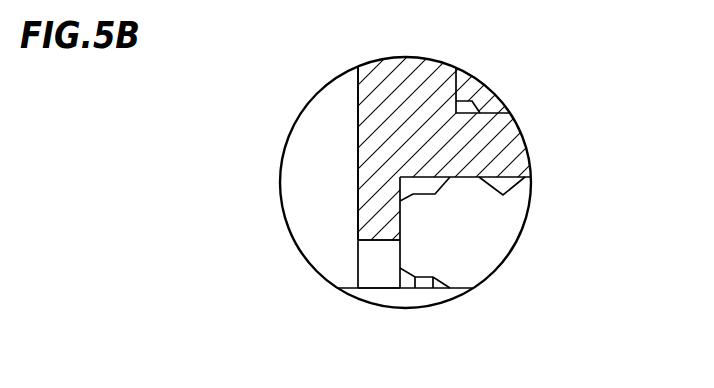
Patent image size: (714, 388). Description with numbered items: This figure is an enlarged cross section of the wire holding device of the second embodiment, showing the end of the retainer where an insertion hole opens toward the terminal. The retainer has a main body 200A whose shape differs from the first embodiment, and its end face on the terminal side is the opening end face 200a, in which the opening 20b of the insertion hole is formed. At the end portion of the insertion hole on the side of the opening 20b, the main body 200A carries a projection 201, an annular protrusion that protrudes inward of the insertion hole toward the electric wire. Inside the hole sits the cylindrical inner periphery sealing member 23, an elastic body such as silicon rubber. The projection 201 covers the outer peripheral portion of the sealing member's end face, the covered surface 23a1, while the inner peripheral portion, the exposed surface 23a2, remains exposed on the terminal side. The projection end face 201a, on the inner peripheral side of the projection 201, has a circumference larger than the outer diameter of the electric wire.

The main body 200A is at (413, 68).
The opening end face 200a is at (358, 122).
The projection 201 is at (380, 207).
The covered surface 23a1 is at (397, 217).
The projection end face 201a is at (370, 247).
The opening 20b is at (378, 271).
The exposed surface 23a2 is at (401, 250).
The inner periphery sealing member 23 is at (506, 246).